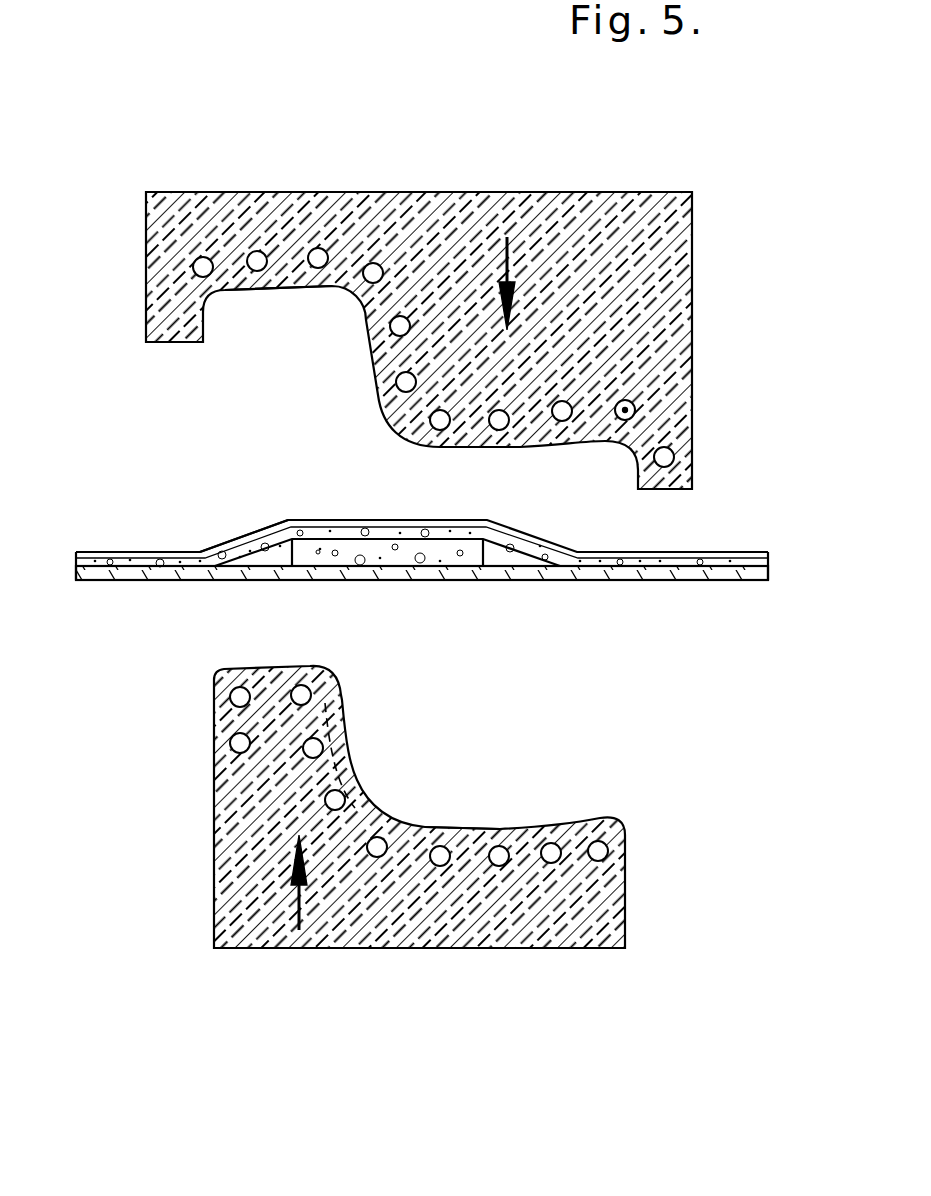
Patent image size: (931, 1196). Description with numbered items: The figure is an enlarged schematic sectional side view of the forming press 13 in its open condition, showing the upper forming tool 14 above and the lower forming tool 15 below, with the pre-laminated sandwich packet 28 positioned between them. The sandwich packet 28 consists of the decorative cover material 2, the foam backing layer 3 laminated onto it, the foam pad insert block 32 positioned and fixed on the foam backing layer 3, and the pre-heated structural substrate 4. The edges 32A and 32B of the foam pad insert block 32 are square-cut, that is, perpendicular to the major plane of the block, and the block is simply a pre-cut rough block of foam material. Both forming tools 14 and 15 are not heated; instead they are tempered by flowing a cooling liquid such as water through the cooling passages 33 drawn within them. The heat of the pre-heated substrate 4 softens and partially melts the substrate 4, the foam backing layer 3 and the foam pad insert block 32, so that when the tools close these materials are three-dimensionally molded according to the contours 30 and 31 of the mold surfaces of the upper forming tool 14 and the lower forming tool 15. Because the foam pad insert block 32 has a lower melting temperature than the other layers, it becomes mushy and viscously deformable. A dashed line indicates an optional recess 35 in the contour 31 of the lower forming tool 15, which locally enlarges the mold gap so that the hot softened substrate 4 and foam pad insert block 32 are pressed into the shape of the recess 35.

The decorative cover material 2 is at (708, 553).
The foam backing layer 3 is at (739, 562).
The structural substrate 4 is at (648, 573).
The forming press 13 is at (138, 412).
The upper forming tool 14 is at (443, 237).
The lower forming tool 15 is at (358, 930).
The pre-laminated sandwich packet 28 is at (183, 530).
The contour of the upper forming tool mold surface 30 is at (327, 285).
The contour of the lower forming tool mold surface 31 is at (508, 828).
The foam pad insert block 32 is at (390, 558).
The edge of the foam pad insert block 32A is at (288, 557).
The edge of the foam pad insert block 32B is at (487, 558).
The cooling passages 33 is at (631, 404).
The recess 35 is at (340, 748).